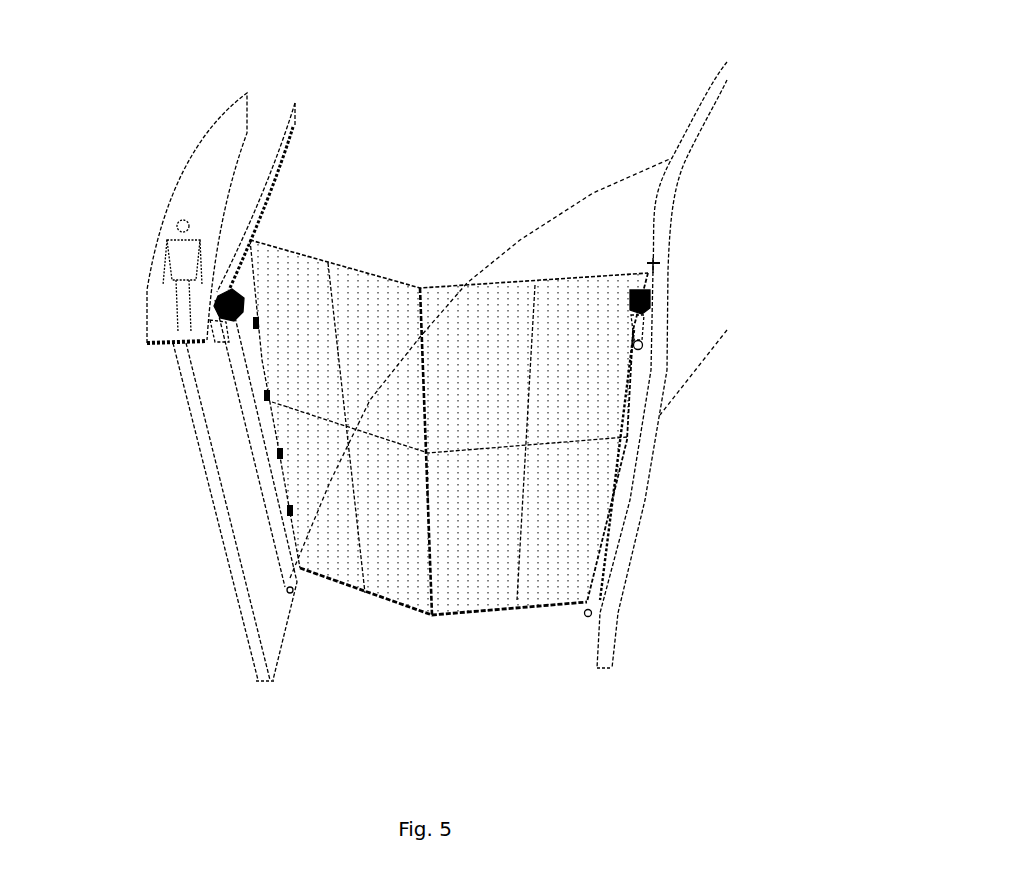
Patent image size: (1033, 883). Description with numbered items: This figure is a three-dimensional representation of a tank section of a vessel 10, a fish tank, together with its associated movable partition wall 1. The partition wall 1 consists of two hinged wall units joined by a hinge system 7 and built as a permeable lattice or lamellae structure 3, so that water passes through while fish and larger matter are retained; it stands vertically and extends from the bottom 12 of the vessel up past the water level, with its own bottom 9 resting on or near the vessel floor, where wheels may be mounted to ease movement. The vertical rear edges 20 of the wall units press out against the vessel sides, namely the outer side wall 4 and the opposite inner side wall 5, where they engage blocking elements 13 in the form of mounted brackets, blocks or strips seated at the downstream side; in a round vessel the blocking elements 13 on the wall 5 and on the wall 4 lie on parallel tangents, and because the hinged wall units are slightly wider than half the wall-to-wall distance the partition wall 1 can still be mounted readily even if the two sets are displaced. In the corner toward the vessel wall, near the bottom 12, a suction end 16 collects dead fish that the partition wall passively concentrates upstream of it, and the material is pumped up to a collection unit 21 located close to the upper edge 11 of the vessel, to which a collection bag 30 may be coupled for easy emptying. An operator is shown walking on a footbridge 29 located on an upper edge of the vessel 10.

The movable partition wall 1 is at (402, 228).
The lattice or lamellae structure 3 is at (470, 552).
The side wall 4 is at (213, 517).
The opposite side wall 5 is at (712, 101).
The hinge system 7 is at (430, 592).
The bottom of movable partition wall 9 is at (358, 595).
The vessel 10 is at (457, 127).
The upper edge of vessel 11 is at (645, 495).
The bottom of vessel 12 is at (706, 466).
The blocking elements 13 is at (262, 400).
The suction end 16 is at (293, 597).
The vertical rear edges 20 is at (270, 445).
The collection unit 21 is at (212, 340).
The footbridge 29 is at (217, 198).
The collection bag 30 is at (230, 297).